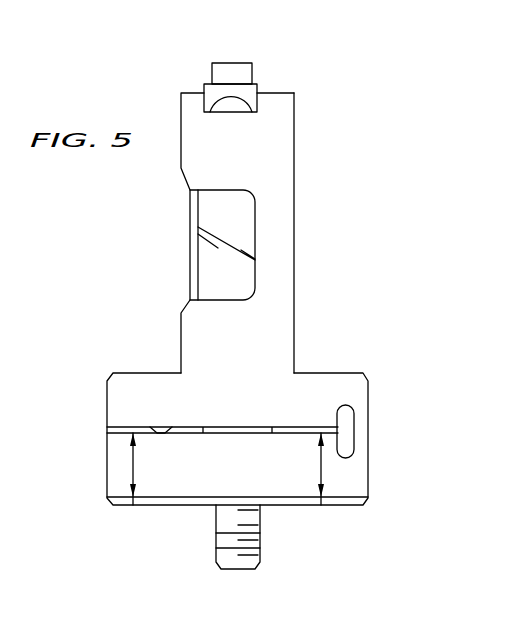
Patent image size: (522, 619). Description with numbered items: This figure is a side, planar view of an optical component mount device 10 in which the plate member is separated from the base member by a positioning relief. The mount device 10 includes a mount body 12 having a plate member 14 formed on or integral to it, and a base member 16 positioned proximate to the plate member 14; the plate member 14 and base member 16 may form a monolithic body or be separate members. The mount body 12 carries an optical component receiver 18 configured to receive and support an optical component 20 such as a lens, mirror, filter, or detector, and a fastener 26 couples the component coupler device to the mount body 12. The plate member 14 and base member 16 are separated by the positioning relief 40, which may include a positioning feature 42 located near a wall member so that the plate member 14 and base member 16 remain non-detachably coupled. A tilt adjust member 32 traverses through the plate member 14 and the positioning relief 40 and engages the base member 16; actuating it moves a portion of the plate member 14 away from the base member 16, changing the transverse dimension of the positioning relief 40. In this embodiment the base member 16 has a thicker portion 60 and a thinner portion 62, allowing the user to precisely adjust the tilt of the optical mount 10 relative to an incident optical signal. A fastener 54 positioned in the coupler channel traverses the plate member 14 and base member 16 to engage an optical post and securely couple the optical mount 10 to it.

The optical component mount device 10 is at (400, 205).
The mount body 12 is at (293, 327).
The plate member 14 is at (117, 385).
The base member 16 is at (268, 478).
The optical component receiver 18 is at (283, 217).
The optical component 20 is at (215, 257).
The fastener 26 is at (230, 70).
The tilt adjust member 32 is at (157, 426).
The positioning relief 40 is at (115, 427).
The positioning feature 42 is at (345, 433).
The fastener 54 is at (245, 551).
The thicker portion 60 is at (133, 472).
The thinner portion 62 is at (325, 472).